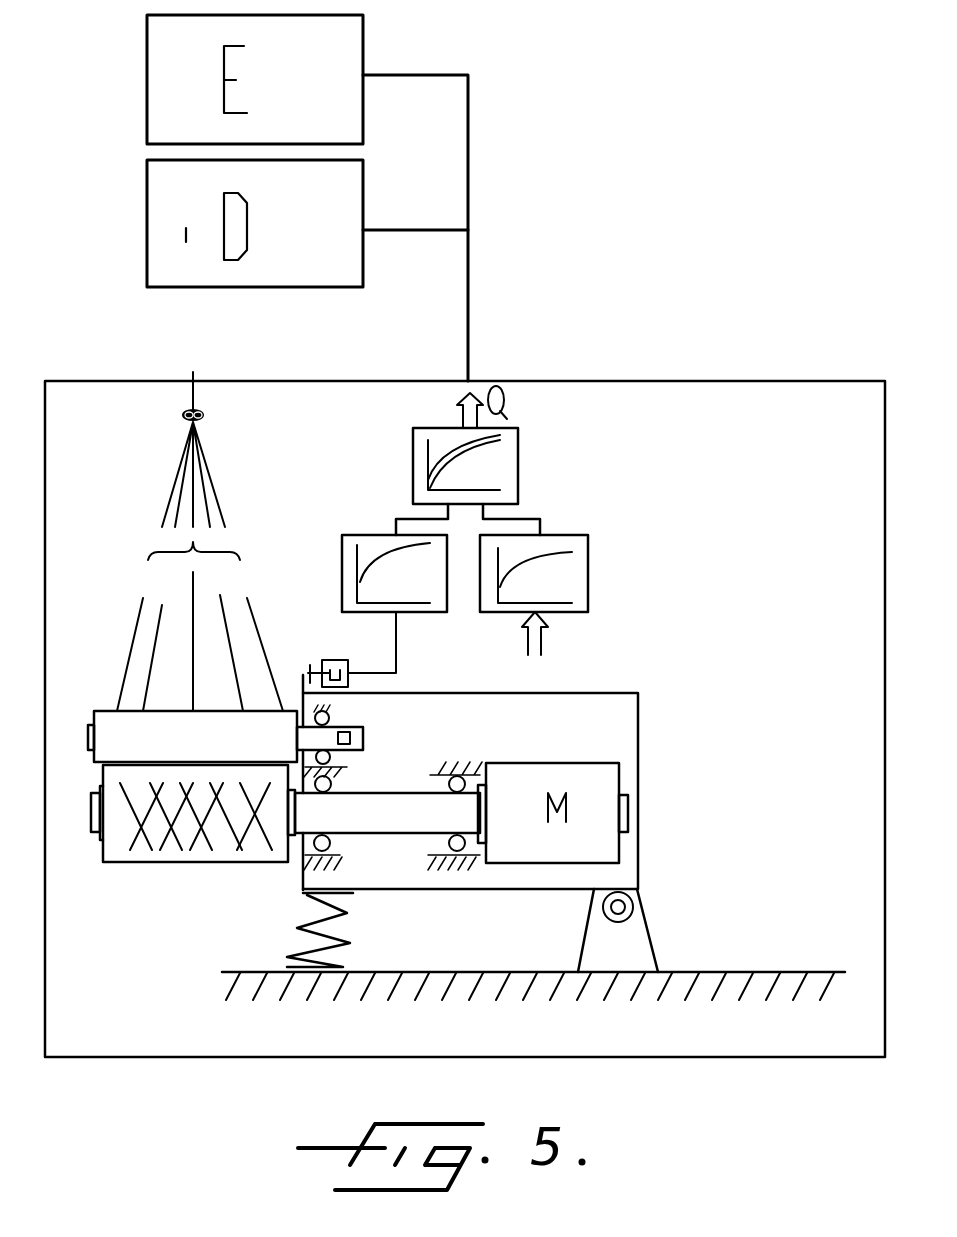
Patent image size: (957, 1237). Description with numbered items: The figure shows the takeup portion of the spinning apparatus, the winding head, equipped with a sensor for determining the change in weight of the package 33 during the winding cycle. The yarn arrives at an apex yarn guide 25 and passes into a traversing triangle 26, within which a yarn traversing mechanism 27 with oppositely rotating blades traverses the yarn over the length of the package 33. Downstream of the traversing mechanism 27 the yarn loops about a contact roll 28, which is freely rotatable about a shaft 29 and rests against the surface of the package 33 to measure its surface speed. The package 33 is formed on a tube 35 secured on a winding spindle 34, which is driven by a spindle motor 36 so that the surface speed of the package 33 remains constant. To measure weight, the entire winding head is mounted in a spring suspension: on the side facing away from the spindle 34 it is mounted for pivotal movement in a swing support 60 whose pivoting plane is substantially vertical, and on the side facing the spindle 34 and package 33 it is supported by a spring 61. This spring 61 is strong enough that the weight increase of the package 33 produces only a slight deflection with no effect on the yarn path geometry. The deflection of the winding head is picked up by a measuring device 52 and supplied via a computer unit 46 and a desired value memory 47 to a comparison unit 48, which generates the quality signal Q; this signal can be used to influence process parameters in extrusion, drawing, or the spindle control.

The apex yarn guide 25 is at (205, 413).
The traversing triangle 26 is at (197, 540).
The yarn traversing mechanism 27 is at (158, 643).
The contact roll 28 is at (123, 730).
The shaft 29 is at (362, 735).
The package 33 is at (186, 850).
The winding spindle 34 is at (377, 820).
The tube 35 is at (103, 838).
The spindle motor 36 is at (518, 845).
The computer unit 46 is at (366, 535).
The desired value memory 47 is at (590, 553).
The comparison unit 48 is at (505, 470).
The measuring device 52 is at (337, 660).
The swing support 60 is at (628, 952).
The spring 61 is at (300, 930).